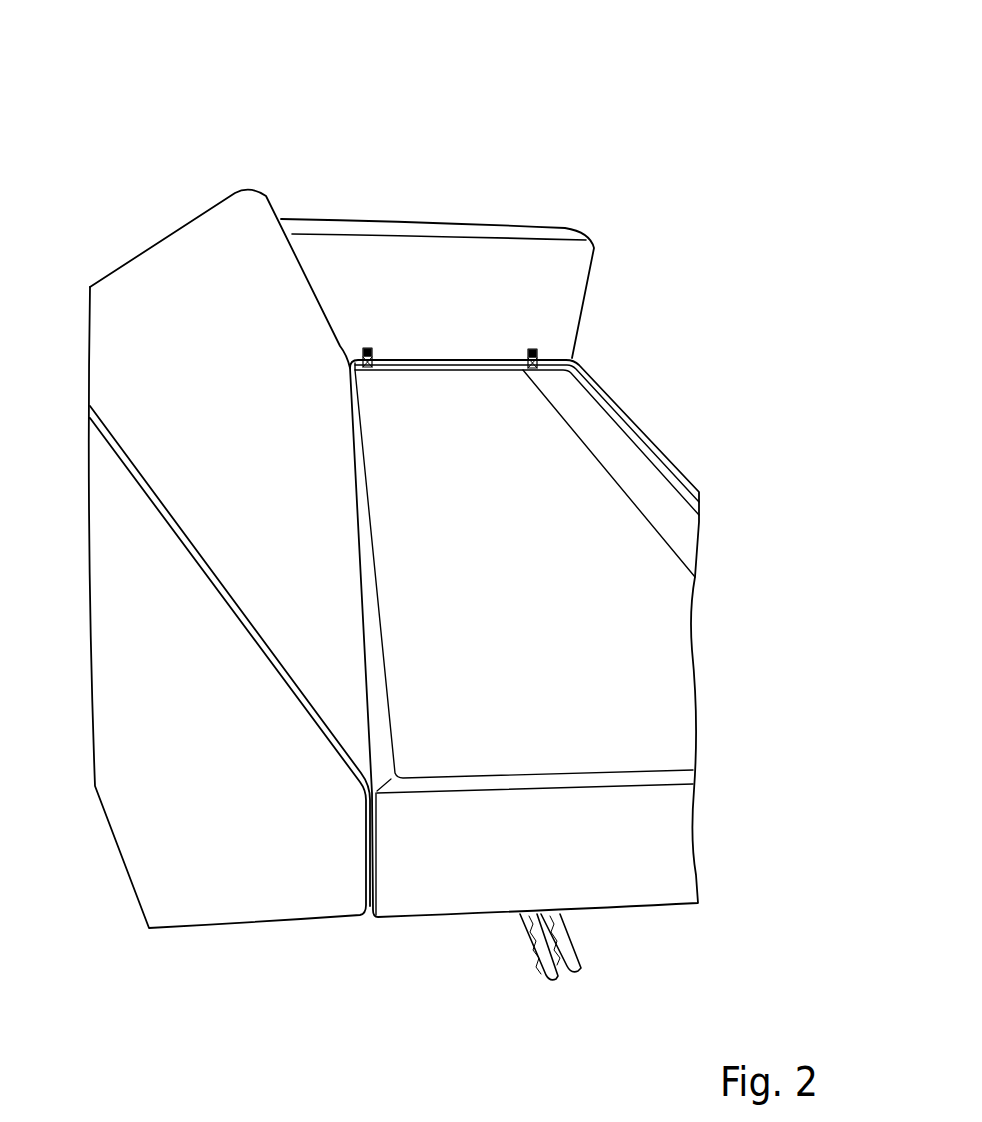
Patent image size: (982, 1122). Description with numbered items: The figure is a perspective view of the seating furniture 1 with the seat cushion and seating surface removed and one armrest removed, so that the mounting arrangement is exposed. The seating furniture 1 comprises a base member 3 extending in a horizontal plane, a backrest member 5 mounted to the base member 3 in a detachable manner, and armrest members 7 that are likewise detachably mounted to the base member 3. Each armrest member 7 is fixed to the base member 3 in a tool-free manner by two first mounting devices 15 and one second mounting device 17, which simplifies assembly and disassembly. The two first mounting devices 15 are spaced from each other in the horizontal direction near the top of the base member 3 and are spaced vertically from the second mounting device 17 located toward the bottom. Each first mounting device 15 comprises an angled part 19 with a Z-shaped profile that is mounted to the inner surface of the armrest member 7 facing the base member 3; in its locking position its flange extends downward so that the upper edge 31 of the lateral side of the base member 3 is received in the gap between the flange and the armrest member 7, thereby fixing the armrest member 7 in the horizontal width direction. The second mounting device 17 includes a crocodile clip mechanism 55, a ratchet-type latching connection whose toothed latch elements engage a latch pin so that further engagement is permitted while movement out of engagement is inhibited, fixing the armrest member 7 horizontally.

The seating furniture 1 is at (158, 142).
The base member 3 is at (532, 538).
The backrest member 5 is at (192, 363).
The armrest member 7 is at (515, 292).
The first mounting device 15 is at (399, 254).
The angled part 19 is at (530, 349).
The second mounting device 17 is at (665, 947).
The crocodile clip mechanism 55 is at (562, 940).
The upper edge 31 is at (572, 783).